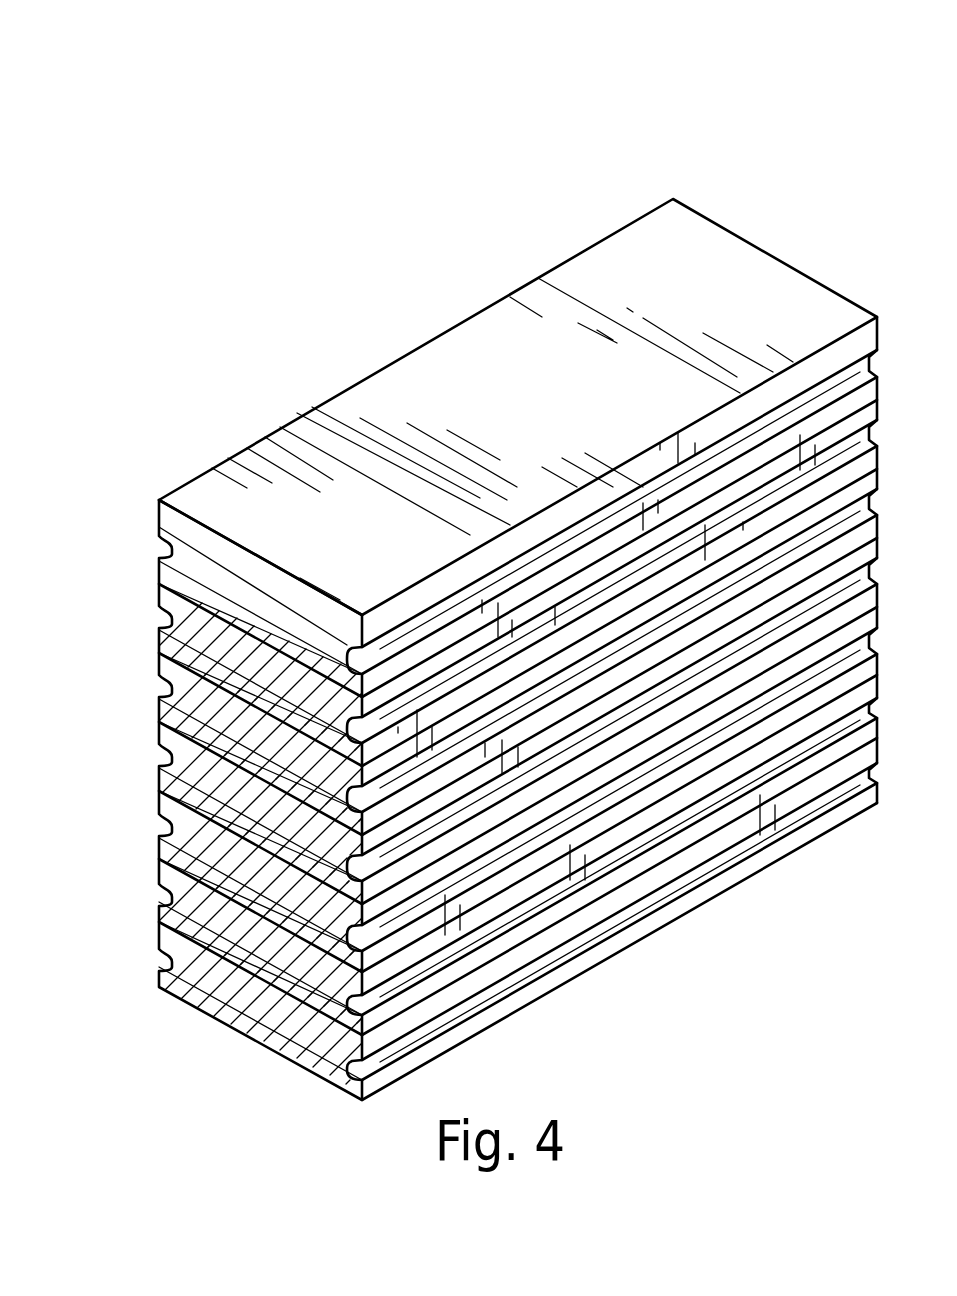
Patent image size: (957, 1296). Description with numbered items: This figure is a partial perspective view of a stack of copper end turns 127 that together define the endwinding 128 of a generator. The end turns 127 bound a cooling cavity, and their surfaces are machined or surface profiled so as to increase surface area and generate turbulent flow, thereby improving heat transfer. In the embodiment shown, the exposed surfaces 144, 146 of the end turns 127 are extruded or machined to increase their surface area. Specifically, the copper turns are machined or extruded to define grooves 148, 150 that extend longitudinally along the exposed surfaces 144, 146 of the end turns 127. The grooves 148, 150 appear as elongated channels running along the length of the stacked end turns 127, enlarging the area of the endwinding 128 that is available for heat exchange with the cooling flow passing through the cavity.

The end turns 127 is at (758, 278).
The endwinding 128 is at (510, 187).
The exposed surface 144 is at (385, 607).
The exposed surface 146 is at (158, 502).
The groove 148 is at (563, 957).
The groove 150 is at (170, 619).